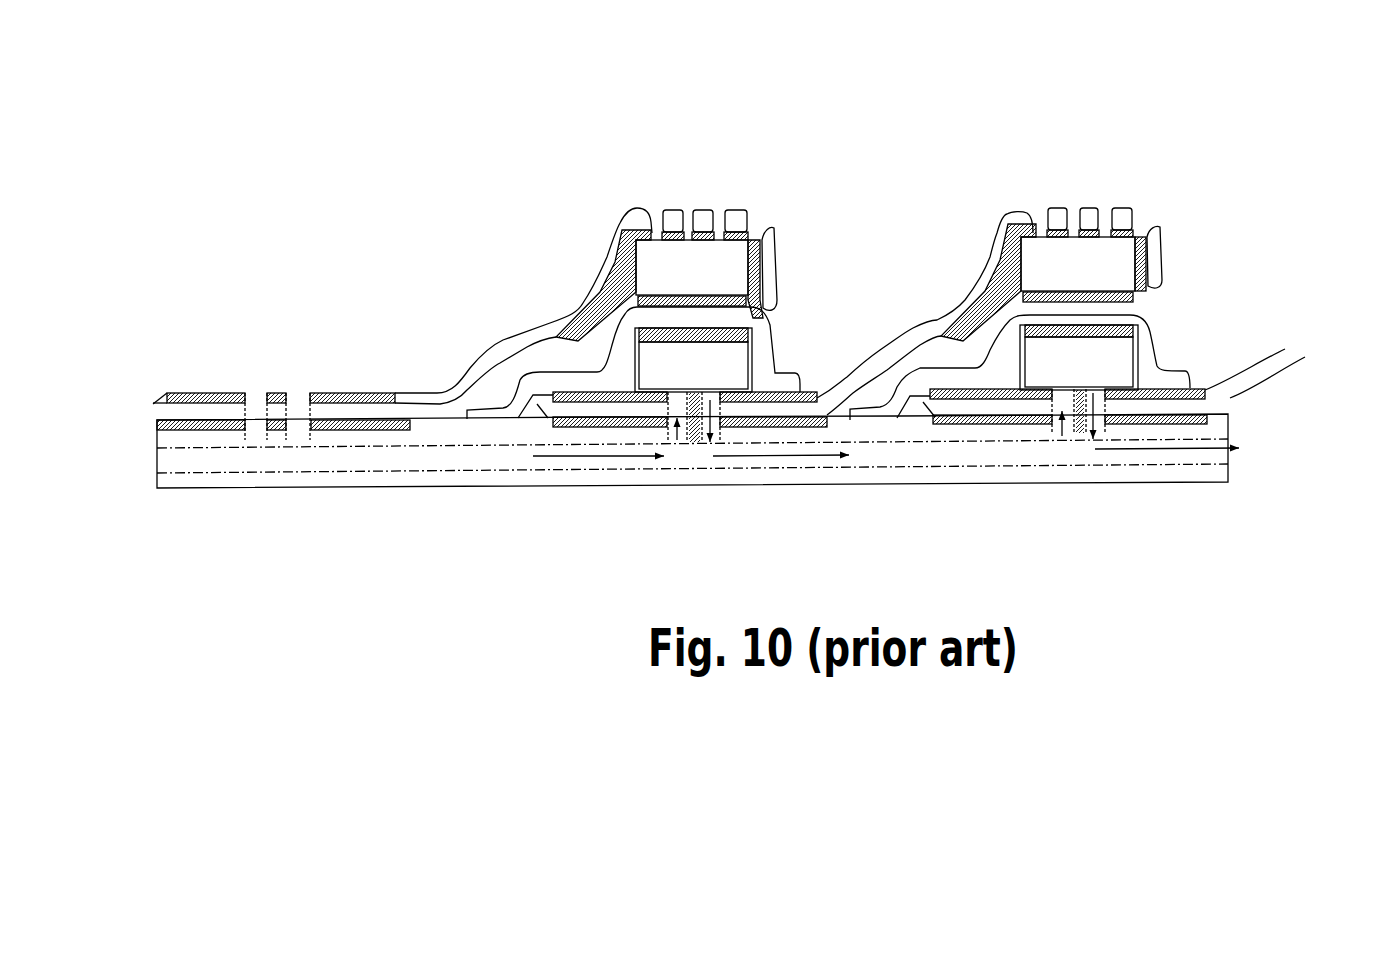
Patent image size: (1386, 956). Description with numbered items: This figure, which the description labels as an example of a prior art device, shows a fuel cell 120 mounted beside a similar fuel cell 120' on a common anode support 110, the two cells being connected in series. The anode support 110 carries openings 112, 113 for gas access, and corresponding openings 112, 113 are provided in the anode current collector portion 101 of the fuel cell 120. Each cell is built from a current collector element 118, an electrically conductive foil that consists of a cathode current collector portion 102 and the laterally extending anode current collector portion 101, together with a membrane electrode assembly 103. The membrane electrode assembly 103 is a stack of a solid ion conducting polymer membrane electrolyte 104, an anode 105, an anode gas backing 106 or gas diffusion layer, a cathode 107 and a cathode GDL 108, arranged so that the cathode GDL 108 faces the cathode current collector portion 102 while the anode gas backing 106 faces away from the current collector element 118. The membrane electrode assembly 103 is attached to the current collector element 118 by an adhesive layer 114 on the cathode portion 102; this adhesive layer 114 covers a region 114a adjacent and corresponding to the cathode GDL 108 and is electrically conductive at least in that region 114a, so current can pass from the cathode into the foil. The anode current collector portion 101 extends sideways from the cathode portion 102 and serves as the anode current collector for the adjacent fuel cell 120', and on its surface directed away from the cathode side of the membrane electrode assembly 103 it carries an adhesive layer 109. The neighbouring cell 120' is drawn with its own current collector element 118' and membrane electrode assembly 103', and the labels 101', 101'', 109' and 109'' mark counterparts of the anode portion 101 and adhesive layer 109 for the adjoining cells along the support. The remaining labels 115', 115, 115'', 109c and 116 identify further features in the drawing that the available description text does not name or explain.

The anode support 110 is at (1223, 472).
The conductive layer 115' is at (283, 496).
The conductive layer 115 is at (674, 493).
The conductive layer 115'' is at (1145, 439).
The dielectric layer 109' is at (274, 348).
The adhesive layer 109 is at (717, 476).
The dielectric layer 109'' is at (1138, 406).
The encapsulation region 109c is at (795, 135).
The via 101' is at (250, 482).
The anode current collector portion 101 is at (736, 478).
The via 101'' is at (1031, 478).
The opening 112 is at (683, 438).
The opening 113 is at (705, 430).
The similar fuel cell 120' is at (641, 243).
The fuel cell 120 is at (1077, 250).
The heat spreader cover 118' is at (523, 306).
The current collector element 118 is at (931, 319).
The chip stack 103' is at (761, 301).
The membrane electrode assembly 103 is at (1093, 316).
The cathode current collector portion 102 is at (1005, 208).
The region 114a is at (1077, 159).
The terminals 116 is at (1095, 194).
The adhesive layer 114 is at (1157, 210).
The cathode GDL 108 is at (1087, 270).
The cathode 107 is at (1108, 293).
The solid ion conducting polymer membrane electrolyte 104 is at (1117, 315).
The anode 105 is at (1117, 330).
The anode gas backing 106 is at (1131, 357).